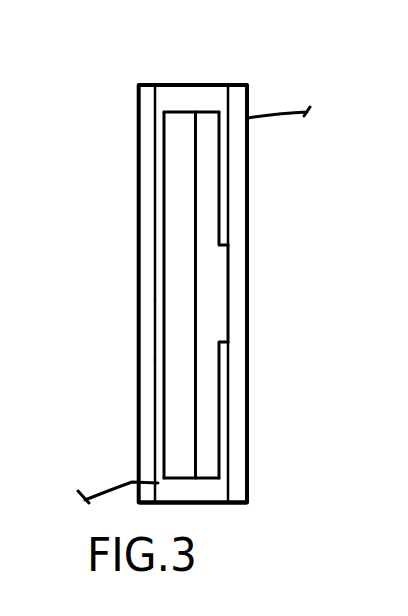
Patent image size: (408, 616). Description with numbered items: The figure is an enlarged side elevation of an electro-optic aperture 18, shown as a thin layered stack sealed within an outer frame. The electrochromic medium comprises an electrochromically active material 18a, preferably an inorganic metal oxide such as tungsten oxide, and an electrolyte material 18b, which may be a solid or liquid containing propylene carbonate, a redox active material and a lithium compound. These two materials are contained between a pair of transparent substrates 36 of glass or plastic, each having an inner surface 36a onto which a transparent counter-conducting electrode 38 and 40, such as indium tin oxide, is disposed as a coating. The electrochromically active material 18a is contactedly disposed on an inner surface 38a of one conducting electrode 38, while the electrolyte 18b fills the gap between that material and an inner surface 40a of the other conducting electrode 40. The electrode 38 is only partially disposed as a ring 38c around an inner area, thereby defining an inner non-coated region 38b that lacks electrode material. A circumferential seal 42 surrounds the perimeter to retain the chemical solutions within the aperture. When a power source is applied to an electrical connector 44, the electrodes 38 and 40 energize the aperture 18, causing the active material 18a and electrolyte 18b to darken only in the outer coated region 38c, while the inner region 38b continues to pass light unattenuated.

The electro-optic aperture 18 is at (73, 51).
The electrochromically active material 18a is at (212, 140).
The electrolyte material 18b is at (177, 138).
The transparent substrates 36 is at (143, 377).
The inner surface of substrate 36a is at (155, 332).
The conducting electrode 38 is at (195, 279).
The inner surface of conducting electrode 38a is at (220, 390).
The inner non-coated region 38b is at (228, 283).
The ring (outer coated region) 38c is at (228, 221).
The conducting electrode 40 is at (155, 170).
The inner surface of conducting electrode 40a is at (163, 201).
The circumferential seal 42 is at (203, 84).
The electrical connector 44 is at (273, 111).